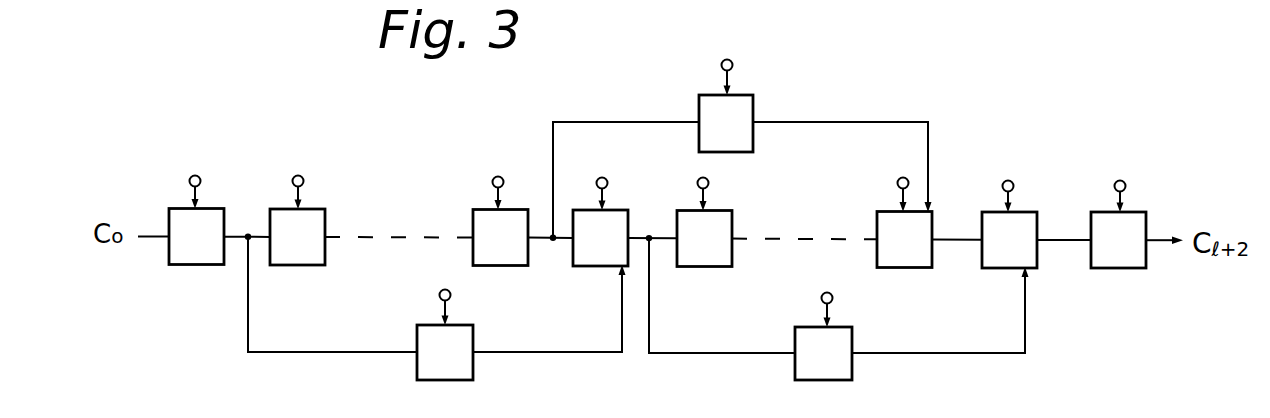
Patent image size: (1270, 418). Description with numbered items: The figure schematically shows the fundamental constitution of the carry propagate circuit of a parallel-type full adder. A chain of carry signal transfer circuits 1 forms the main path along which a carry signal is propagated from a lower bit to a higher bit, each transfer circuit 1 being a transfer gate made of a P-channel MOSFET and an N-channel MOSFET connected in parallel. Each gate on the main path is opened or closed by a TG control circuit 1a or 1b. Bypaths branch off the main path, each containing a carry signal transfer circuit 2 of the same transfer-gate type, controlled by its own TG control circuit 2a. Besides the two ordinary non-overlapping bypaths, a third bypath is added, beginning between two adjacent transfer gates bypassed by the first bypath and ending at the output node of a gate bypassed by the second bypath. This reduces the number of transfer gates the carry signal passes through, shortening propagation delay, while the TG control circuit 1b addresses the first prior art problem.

The carry signal transfer circuit 1 is at (215, 218).
The TG control circuit 1a is at (194, 175).
The TG control circuit 1b is at (597, 178).
The carry signal transfer circuit 2 is at (747, 104).
The TG control circuit 2a is at (733, 64).